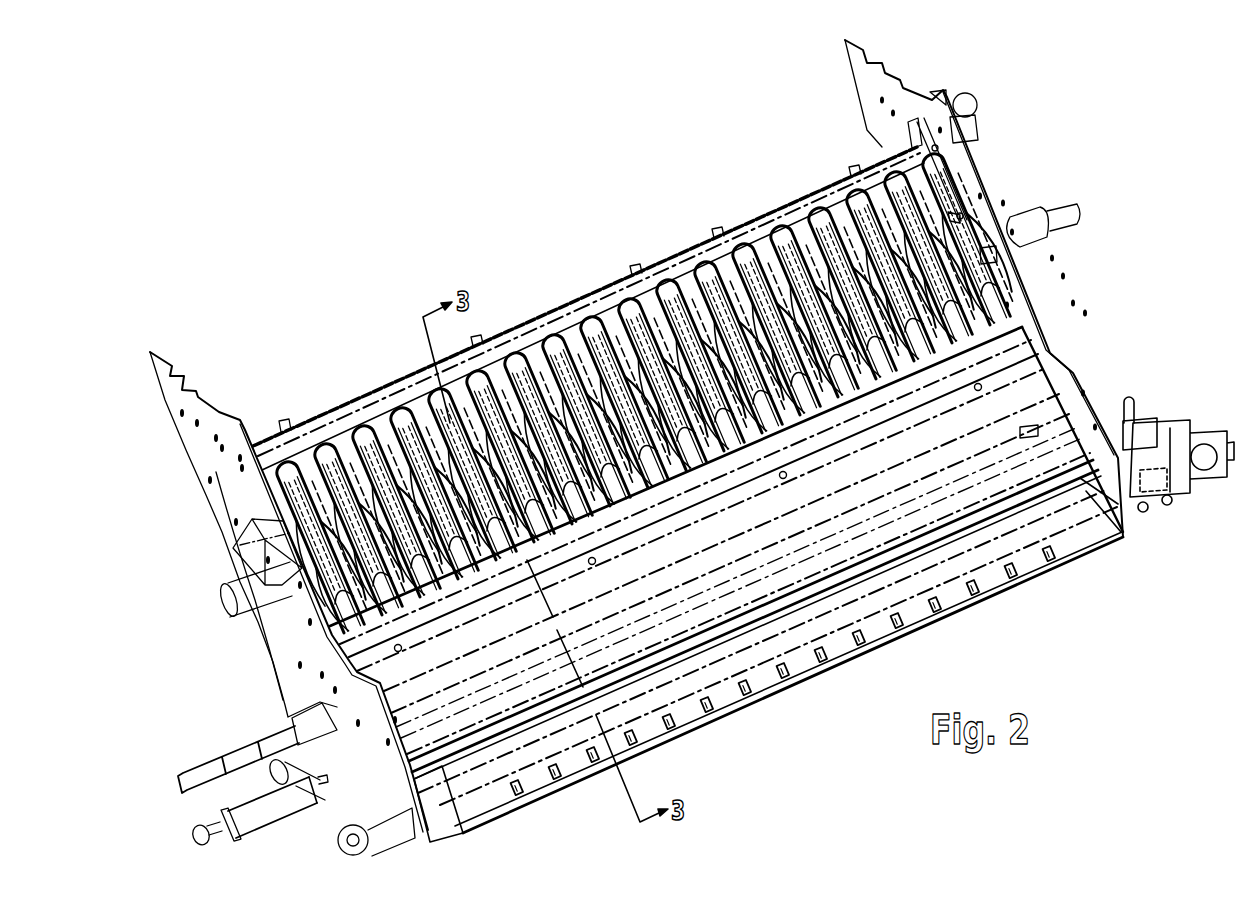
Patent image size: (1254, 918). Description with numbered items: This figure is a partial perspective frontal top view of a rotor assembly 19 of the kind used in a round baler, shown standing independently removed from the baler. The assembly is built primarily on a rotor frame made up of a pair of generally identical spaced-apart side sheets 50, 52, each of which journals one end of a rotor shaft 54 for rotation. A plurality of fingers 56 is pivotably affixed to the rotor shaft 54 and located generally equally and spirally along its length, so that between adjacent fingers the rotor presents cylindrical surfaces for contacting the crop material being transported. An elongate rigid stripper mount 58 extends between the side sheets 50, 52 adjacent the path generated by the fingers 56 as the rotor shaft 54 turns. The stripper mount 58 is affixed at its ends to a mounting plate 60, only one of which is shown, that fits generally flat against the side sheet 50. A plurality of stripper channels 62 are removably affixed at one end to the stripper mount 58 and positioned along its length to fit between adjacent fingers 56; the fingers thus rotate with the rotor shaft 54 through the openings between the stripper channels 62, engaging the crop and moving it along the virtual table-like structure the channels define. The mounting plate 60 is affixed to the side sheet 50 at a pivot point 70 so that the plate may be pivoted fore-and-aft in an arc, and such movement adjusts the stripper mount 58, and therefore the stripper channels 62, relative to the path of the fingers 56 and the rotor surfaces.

The rotary cutter assembly 19 is at (460, 181).
The side sheet 50 is at (982, 178).
The side sheet 52 is at (217, 472).
The rotor shaft 54 is at (238, 589).
The fingers 56 is at (580, 500).
The stripper mount 58 is at (543, 305).
The mounting plate 60 is at (946, 178).
The stripper channels 62 is at (397, 417).
The pivot point 70 is at (963, 213).